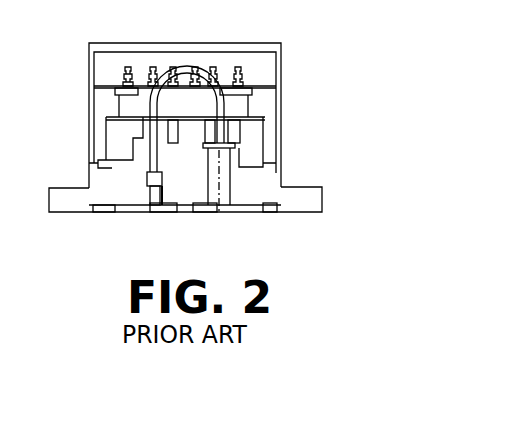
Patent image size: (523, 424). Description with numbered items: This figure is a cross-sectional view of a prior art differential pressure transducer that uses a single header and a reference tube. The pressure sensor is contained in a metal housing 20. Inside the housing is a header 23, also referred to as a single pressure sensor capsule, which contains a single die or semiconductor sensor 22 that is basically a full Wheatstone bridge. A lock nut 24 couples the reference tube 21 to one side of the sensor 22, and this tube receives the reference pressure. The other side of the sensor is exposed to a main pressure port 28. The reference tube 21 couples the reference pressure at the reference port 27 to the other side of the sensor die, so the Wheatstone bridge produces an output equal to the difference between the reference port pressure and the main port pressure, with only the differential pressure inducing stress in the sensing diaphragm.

The metal housing 20 is at (302, 213).
The reference tube 21 is at (202, 72).
The semiconductor sensor 22 is at (150, 185).
The header 23 is at (237, 136).
The lock nut 24 is at (138, 130).
The reference port 27 is at (135, 199).
The main pressure port 28 is at (220, 213).